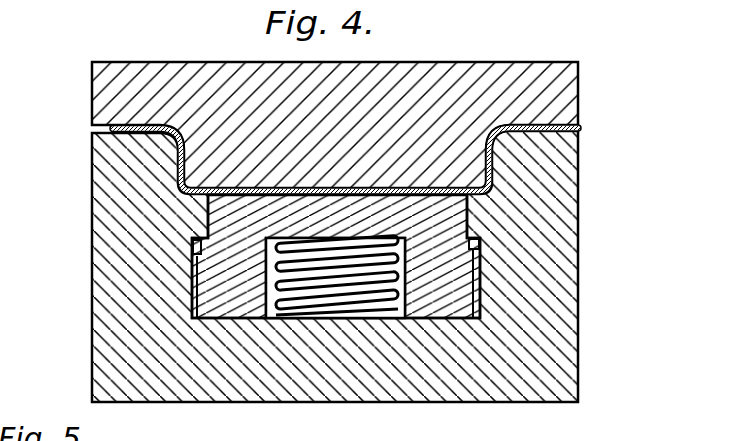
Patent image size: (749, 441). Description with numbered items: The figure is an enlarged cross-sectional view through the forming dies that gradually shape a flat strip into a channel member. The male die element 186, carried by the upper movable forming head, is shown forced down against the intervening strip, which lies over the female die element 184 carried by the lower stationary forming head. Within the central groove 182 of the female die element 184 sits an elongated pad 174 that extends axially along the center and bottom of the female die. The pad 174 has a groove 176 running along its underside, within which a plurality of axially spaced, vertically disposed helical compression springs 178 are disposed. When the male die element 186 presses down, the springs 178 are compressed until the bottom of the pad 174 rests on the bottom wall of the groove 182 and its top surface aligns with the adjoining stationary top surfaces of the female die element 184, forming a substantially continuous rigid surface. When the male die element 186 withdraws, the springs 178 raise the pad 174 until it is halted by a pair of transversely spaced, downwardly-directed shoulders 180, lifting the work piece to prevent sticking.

The male die element 186 is at (553, 99).
The female die element 184 is at (543, 257).
The pad 174 is at (440, 213).
The groove 176 is at (444, 280).
The helical compression springs 178 is at (303, 296).
The shoulders 180 is at (190, 252).
The central groove 182 is at (198, 268).